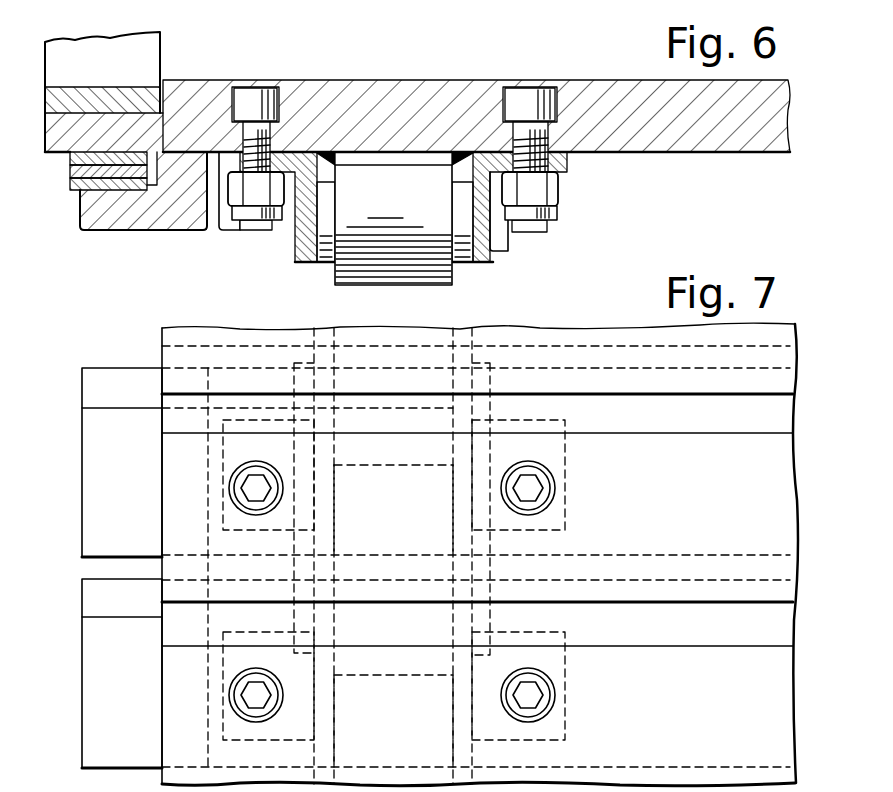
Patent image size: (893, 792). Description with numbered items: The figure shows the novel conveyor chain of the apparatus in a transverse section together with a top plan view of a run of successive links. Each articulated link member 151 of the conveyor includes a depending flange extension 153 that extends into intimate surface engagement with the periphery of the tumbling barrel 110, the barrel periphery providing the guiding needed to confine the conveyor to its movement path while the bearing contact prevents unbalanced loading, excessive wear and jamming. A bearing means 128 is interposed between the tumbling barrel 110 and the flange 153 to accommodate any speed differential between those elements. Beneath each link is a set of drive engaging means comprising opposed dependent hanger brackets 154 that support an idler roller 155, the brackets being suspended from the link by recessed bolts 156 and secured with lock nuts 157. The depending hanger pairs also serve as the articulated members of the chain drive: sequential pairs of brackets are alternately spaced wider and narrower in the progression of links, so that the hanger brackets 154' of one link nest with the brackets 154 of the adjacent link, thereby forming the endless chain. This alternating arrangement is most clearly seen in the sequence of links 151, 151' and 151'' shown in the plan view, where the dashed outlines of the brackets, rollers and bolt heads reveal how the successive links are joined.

In FIG. 6, the tumbling barrel 110 is at (113, 97).
In FIG. 6, the bearing means 128 is at (67, 180).
In FIG. 6, the link member 151 is at (476, 91).
In FIG. 7, the link member 151 is at (474, 539).
In FIG. 7, the link member 151' is at (731, 485).
In FIG. 7, the link member 151'' is at (729, 696).
In FIG. 6, the depending flange extension 153 is at (92, 229).
In FIG. 7, the depending flange extension 153 is at (130, 496).
In FIG. 6, the hanger bracket 154 is at (397, 220).
In FIG. 7, the hanger bracket 154 is at (476, 556).
In FIG. 6, the hanger bracket 154' is at (410, 237).
In FIG. 7, the hanger bracket 154' is at (393, 616).
In FIG. 6, the idler roller 155 is at (405, 286).
In FIG. 7, the idler roller 155 is at (352, 468).
In FIG. 6, the recessed bolt 156 is at (247, 93).
In FIG. 7, the recessed bolt 156 is at (238, 489).
In FIG. 6, the lock nut 157 is at (222, 223).